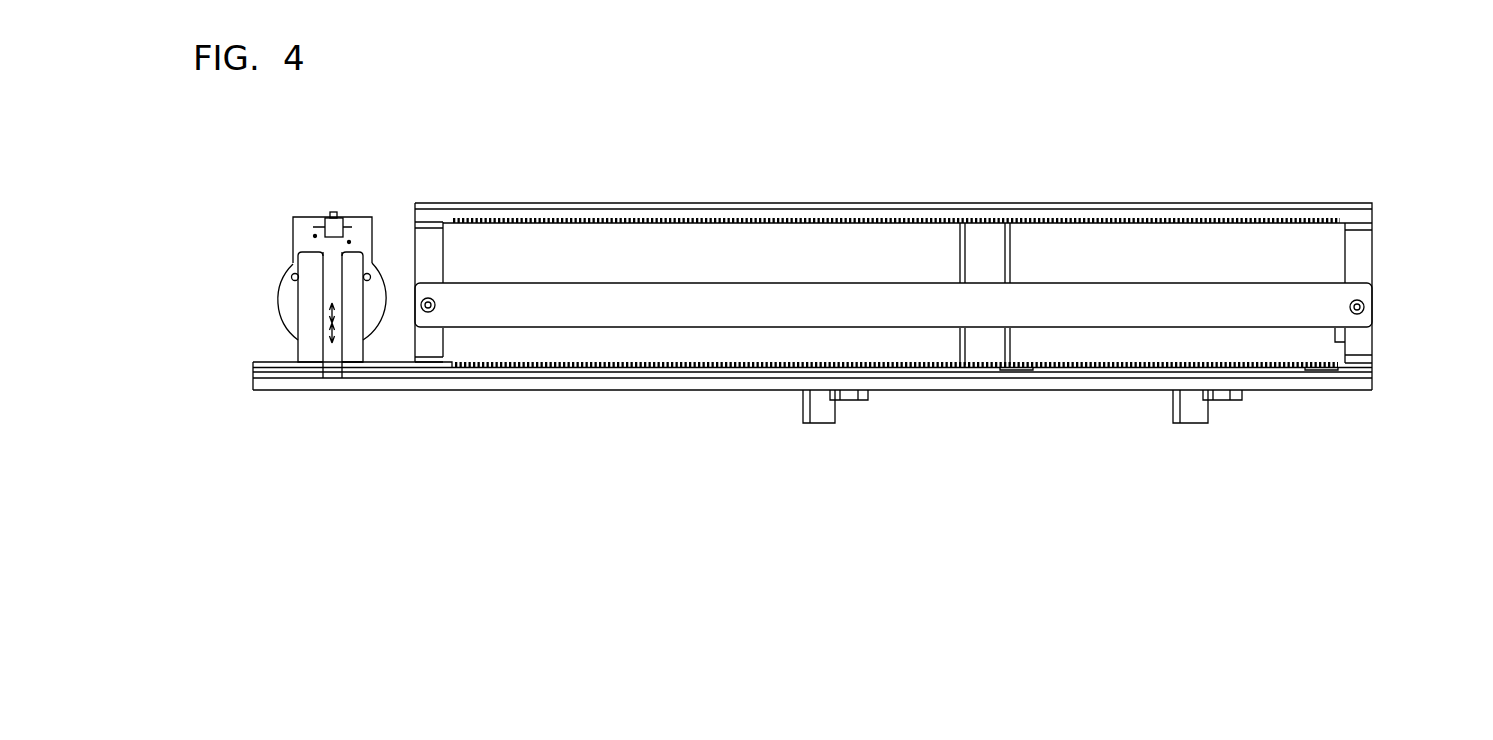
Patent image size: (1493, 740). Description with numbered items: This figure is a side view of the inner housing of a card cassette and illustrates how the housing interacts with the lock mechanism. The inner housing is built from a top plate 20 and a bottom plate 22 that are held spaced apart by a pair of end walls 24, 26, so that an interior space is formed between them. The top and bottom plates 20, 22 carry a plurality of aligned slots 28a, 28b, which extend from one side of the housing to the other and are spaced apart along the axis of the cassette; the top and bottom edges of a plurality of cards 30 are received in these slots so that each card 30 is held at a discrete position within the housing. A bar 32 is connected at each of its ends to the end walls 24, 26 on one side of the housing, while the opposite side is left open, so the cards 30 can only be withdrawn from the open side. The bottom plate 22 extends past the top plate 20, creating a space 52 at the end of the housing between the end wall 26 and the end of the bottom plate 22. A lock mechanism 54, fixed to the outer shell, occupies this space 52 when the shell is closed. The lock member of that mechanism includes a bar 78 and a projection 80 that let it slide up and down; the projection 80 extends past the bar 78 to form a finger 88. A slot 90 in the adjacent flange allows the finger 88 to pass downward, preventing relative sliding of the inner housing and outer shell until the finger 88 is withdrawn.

The top plate 20 is at (843, 208).
The bottom plate 22 is at (1032, 383).
The end wall 24 is at (1358, 342).
The end wall 26 is at (428, 342).
The slots 28a is at (645, 222).
The slots 28b is at (762, 367).
The cards 30 is at (1010, 250).
The bar 32 is at (647, 313).
The space 52 is at (395, 235).
The lock mechanism 54 is at (282, 330).
The bar 78 is at (355, 353).
The projection 80 is at (333, 270).
The finger 88 is at (328, 367).
The slot 90 is at (352, 353).